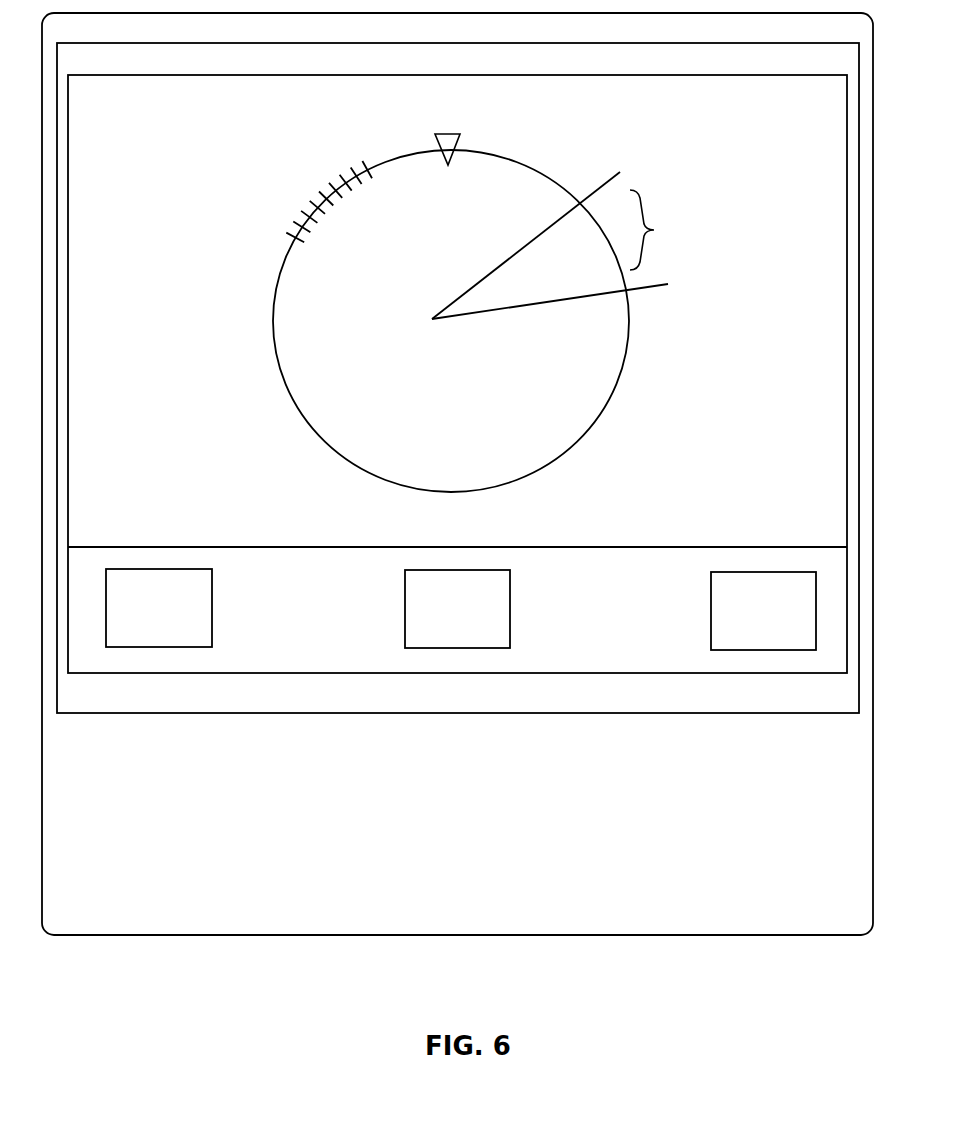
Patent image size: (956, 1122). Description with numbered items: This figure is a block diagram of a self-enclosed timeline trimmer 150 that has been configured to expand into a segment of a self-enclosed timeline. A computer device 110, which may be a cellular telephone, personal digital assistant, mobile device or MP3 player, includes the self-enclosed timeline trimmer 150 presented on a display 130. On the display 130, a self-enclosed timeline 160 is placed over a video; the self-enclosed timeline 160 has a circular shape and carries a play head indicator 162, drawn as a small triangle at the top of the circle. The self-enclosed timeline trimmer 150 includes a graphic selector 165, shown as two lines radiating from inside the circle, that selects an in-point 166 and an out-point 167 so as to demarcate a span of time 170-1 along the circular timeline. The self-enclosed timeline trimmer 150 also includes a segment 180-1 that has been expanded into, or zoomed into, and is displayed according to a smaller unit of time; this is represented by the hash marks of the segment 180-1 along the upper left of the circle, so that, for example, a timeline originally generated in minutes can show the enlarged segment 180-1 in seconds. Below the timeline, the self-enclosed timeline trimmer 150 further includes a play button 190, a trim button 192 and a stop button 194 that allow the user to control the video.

The computer device 110 is at (472, 798).
The display 130 is at (182, 713).
The self-enclosed timeline trimmer 150 is at (290, 674).
The self-enclosed timeline 160 is at (311, 423).
The play head indicator 162 is at (435, 137).
The graphic selector 165 is at (494, 331).
The in-point 166 is at (582, 194).
The out-point 167 is at (640, 293).
The span of time 170-1 is at (654, 230).
The segment 180-1 is at (283, 163).
The play button 190 is at (212, 588).
The trim button 192 is at (510, 595).
The stop button 194 is at (711, 620).